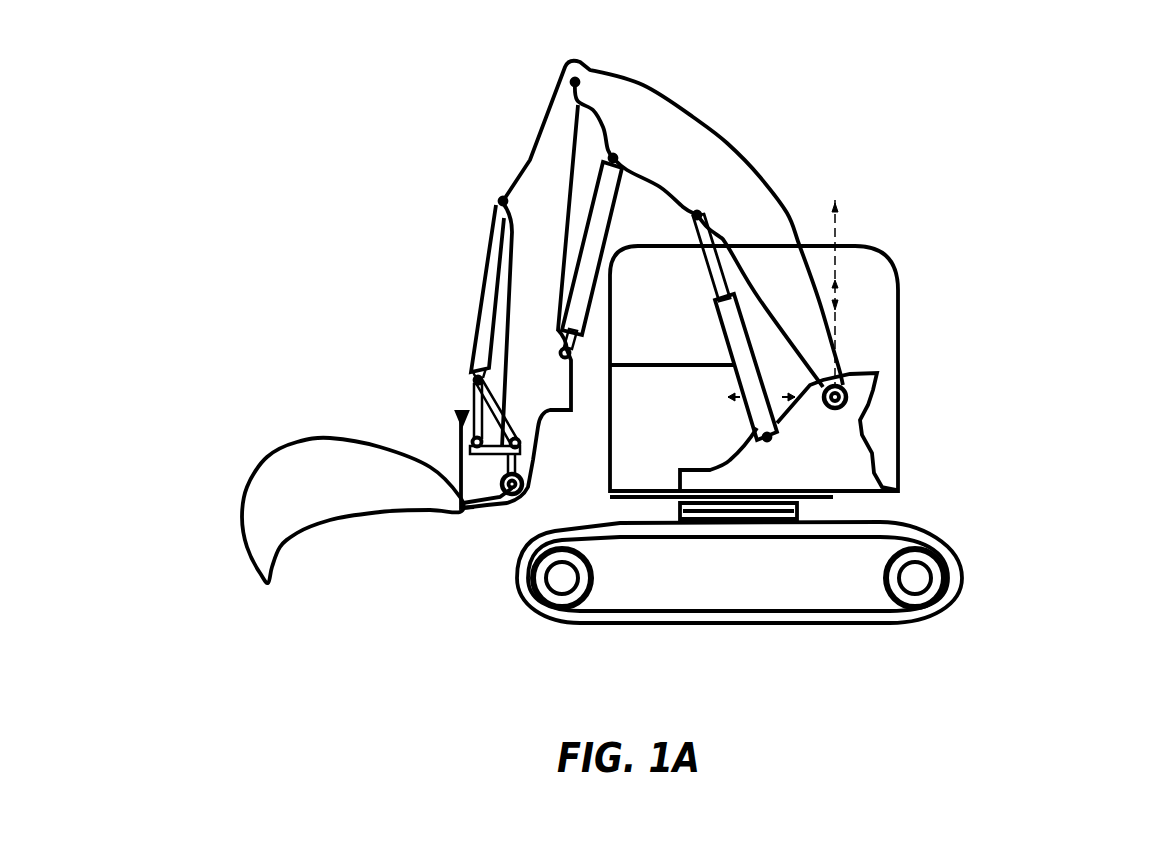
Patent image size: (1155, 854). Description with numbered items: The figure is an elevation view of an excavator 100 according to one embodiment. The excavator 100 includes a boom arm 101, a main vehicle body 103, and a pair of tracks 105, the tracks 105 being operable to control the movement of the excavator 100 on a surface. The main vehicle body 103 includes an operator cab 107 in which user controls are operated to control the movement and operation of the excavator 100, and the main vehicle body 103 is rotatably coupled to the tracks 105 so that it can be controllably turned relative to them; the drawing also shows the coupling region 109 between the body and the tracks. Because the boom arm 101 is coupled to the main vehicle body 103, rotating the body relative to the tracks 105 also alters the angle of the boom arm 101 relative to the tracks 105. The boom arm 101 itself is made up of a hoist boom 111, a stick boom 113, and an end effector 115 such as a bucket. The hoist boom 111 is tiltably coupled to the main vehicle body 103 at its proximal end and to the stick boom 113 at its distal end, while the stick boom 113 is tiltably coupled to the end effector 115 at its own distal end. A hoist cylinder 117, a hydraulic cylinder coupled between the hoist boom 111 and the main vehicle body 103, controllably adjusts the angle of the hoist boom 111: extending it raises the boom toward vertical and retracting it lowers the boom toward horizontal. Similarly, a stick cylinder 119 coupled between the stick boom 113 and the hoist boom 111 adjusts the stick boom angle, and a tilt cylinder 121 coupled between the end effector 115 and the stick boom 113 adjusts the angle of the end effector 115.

The excavator 100 is at (208, 129).
The boom arm 101 is at (509, 102).
The main vehicle body 103 is at (893, 352).
The tracks 105 is at (935, 590).
The operator cab 107 is at (630, 337).
The swing frame / turntable 109 is at (832, 505).
The hoist boom 111 is at (712, 125).
The stick boom 113 is at (507, 183).
The end effector 115 is at (273, 455).
The hoist cylinder 117 is at (750, 365).
The stick cylinder 119 is at (603, 197).
The tilt cylinder 121 is at (482, 290).